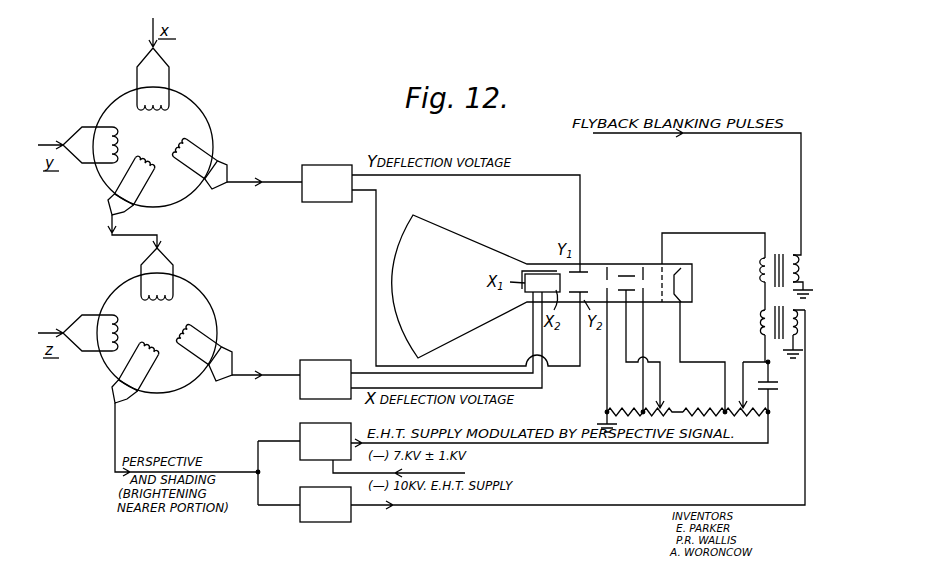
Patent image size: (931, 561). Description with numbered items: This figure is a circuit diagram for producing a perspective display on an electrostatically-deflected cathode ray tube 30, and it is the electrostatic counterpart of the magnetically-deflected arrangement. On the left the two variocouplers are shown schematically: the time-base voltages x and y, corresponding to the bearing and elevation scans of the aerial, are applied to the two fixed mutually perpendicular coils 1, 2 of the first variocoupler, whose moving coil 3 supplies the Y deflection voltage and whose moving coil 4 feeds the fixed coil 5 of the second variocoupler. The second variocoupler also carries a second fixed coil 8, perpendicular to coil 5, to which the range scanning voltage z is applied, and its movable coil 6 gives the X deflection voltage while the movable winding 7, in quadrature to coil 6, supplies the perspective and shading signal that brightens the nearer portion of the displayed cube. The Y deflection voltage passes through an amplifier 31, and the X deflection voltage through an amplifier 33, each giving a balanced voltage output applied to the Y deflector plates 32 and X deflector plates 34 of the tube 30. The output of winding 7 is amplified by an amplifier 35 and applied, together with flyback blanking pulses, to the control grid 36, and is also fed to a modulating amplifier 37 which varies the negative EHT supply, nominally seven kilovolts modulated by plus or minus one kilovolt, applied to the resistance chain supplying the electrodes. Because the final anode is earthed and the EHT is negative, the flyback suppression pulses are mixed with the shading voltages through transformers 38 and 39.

The fixed coil 1 is at (153, 110).
The fixed coil 2 is at (118, 139).
The moving coil 3 is at (180, 139).
The moving coil 4 is at (143, 160).
The fixed coil 5 is at (157, 300).
The movable coil 6 is at (184, 326).
The movable winding 7 is at (147, 346).
The second fixed coil 8 is at (118, 335).
The cathode ray tube 30 is at (410, 222).
The amplifier 31 is at (311, 165).
The Y deflection coils 32 is at (618, 250).
The amplifier 33 is at (327, 360).
The X deflecting coils 34 is at (536, 273).
The amplifier 35 is at (304, 491).
The control grid 36 is at (660, 272).
The amplifier 37 is at (300, 430).
The transformer 38 is at (776, 252).
The transformer 39 is at (760, 312).